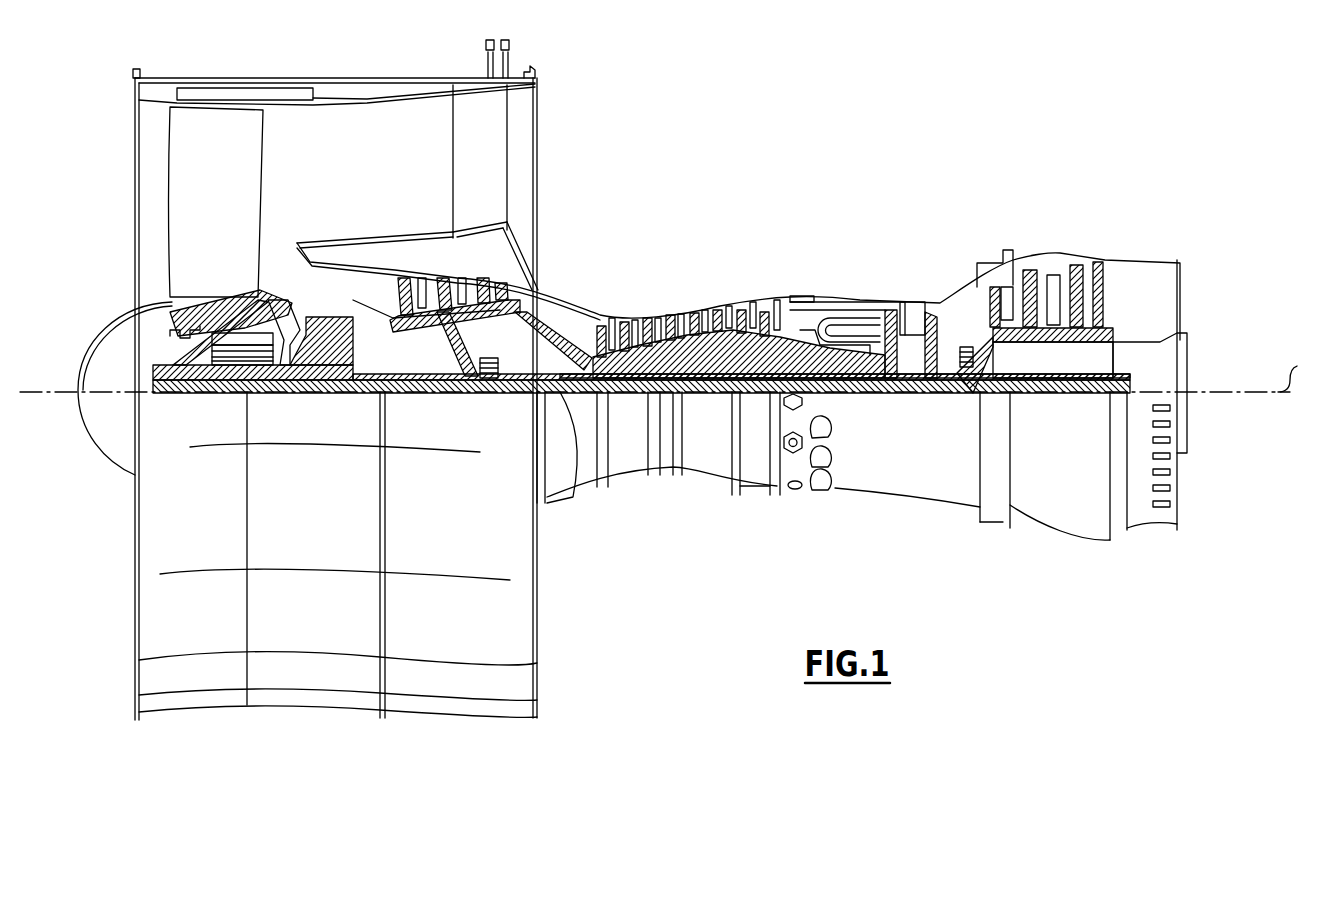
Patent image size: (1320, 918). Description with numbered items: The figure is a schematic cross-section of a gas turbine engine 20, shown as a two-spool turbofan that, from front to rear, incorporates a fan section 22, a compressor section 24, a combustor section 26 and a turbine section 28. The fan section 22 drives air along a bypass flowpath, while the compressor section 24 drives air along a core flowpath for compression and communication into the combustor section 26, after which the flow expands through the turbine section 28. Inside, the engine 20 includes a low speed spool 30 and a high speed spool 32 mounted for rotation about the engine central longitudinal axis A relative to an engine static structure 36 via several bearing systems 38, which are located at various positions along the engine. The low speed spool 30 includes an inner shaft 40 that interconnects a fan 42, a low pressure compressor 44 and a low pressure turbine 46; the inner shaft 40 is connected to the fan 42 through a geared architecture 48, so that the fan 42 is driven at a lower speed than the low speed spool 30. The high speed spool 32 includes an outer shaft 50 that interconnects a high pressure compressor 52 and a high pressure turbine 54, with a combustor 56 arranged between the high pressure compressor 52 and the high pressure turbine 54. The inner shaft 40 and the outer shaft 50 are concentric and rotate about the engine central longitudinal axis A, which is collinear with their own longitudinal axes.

The gas turbine engine 20 is at (862, 122).
The fan section 22 is at (260, 70).
The compressor section 24 is at (739, 304).
The combustor section 26 is at (875, 295).
The turbine section 28 is at (1072, 349).
The low speed spool 30 is at (711, 398).
The high speed spool 32 is at (752, 362).
The engine static structure 36 is at (756, 492).
The bearing systems 38 is at (493, 393).
The inner shaft 40 is at (559, 395).
The fan 42 is at (228, 221).
The low pressure compressor 44 is at (462, 284).
The low pressure turbine 46 is at (1048, 279).
The geared architecture 48 is at (345, 380).
The outer shaft 50 is at (847, 386).
The high pressure compressor 52 is at (682, 360).
The high pressure turbine 54 is at (918, 301).
The combustor 56 is at (840, 323).